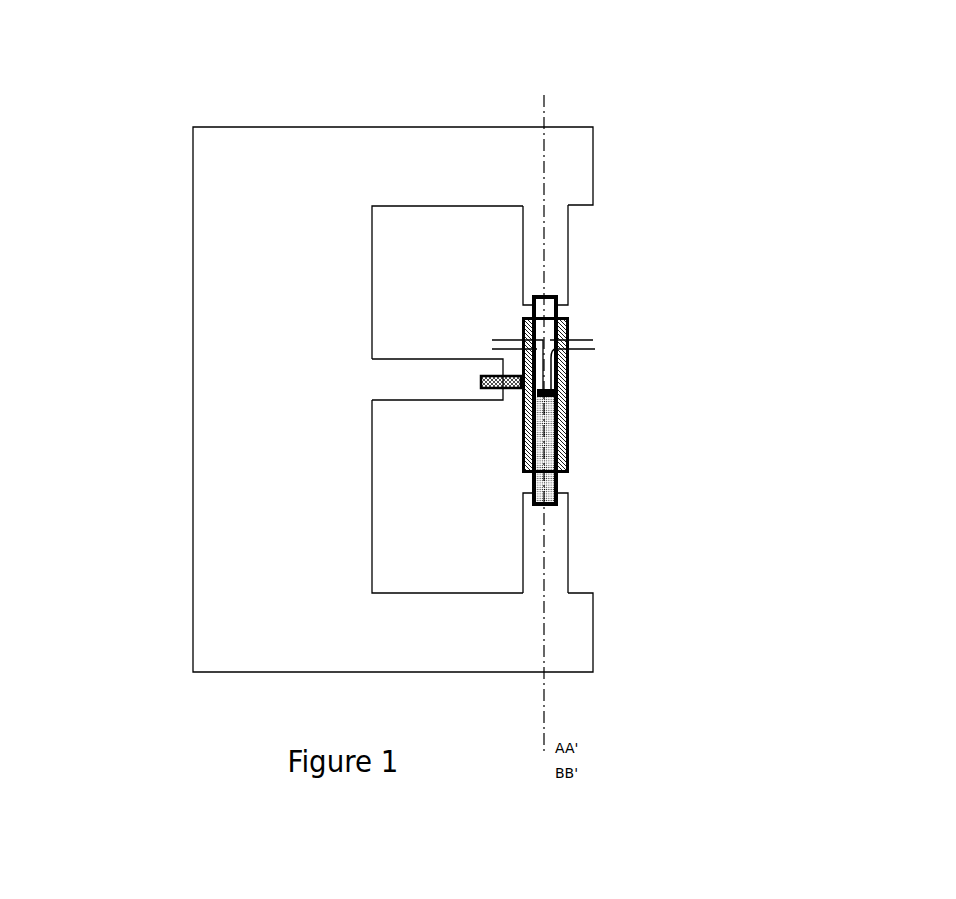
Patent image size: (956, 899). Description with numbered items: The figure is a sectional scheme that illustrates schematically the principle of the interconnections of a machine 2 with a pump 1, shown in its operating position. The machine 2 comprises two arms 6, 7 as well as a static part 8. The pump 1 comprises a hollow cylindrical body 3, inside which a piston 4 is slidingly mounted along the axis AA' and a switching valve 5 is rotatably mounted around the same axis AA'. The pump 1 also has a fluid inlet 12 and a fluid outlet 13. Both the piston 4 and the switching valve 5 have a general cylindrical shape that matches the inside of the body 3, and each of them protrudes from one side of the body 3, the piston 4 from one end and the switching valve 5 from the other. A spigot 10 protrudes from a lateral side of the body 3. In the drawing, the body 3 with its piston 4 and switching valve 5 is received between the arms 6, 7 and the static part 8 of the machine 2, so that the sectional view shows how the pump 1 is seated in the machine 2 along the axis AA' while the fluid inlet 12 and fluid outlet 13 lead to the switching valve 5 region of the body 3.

The pump 1 is at (433, 381).
The machine 2 is at (272, 167).
The hollow cylindrical body 3 is at (560, 365).
The piston 4 is at (550, 475).
The switching valve 5 is at (560, 310).
The arm 6 is at (557, 255).
The arm 7 is at (548, 562).
The static part 8 is at (438, 375).
The spigot 10 is at (483, 378).
The fluid inlet 12 is at (514, 336).
The fluid outlet 13 is at (588, 343).